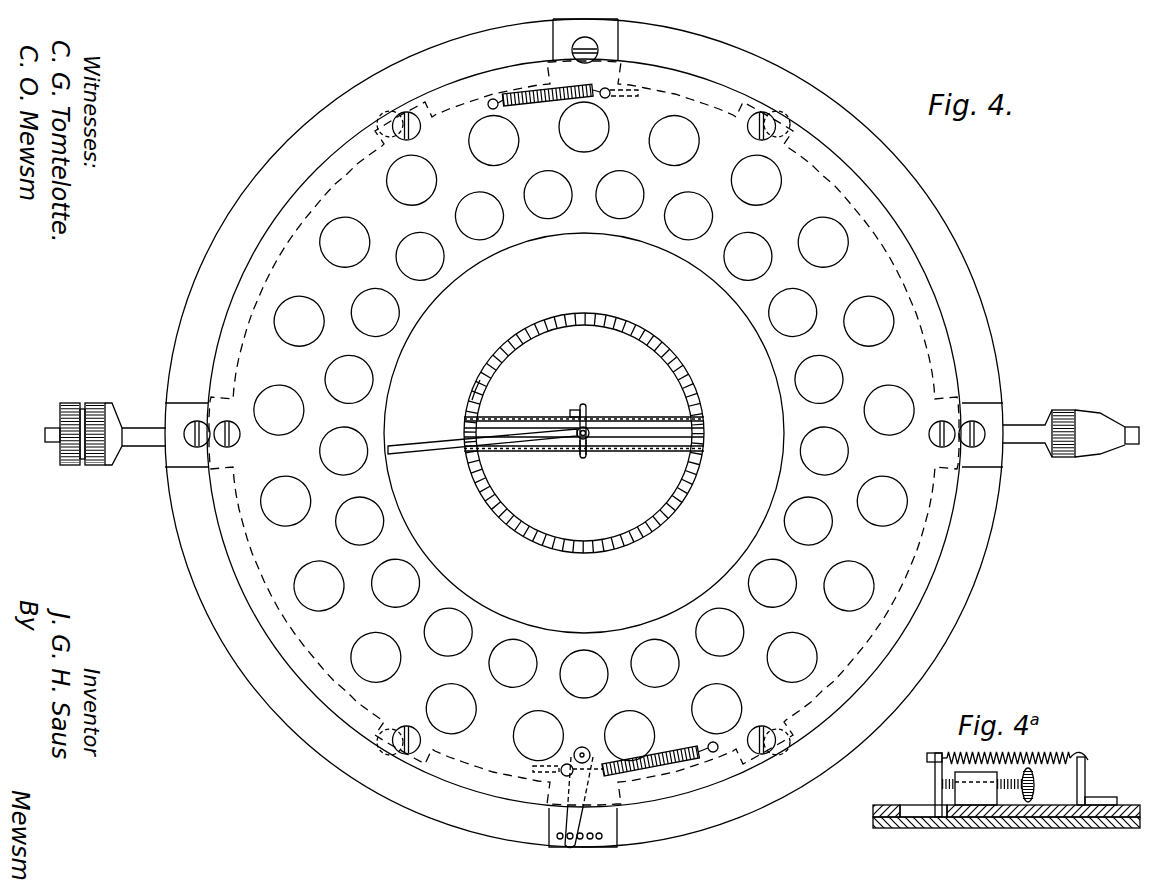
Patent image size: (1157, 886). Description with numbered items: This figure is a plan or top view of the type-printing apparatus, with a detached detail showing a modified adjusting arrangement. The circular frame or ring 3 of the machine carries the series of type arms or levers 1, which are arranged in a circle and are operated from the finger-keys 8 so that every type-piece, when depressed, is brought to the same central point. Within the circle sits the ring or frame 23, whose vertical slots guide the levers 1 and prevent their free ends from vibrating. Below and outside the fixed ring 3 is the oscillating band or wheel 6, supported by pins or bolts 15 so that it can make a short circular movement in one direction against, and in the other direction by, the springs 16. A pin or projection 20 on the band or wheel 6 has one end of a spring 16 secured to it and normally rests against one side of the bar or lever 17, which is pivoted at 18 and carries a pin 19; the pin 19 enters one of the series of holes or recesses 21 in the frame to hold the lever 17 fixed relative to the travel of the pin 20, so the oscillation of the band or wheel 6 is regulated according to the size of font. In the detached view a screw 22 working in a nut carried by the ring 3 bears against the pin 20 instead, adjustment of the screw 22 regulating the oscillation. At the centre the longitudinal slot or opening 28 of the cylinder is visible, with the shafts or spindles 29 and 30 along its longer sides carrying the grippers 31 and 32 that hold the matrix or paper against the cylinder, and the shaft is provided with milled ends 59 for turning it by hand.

In FIG. 4, the type arm or lever 1 is at (455, 438).
In FIG. 4A, the circular frame or ring 3 is at (1128, 806).
In FIG. 4A, the oscillating band or wheel 6 is at (873, 824).
In FIG. 4, the finger-keys 8 is at (584, 433).
In FIG. 4, the pins or bolts 15 is at (783, 120).
In FIG. 4, the springs 16 is at (534, 100).
In FIG. 4A, the springs 16 is at (1068, 750).
In FIG. 4, the bar or lever 17 is at (577, 820).
In FIG. 4, the pivot 18 is at (588, 744).
In FIG. 4, the pin 19 is at (556, 836).
In FIG. 4, the pin or projection 20 is at (562, 774).
In FIG. 4A, the pin or projection 20 is at (933, 760).
In FIG. 4, the series of holes or recesses 21 is at (603, 836).
In FIG. 4A, the screw 22 is at (1034, 785).
In FIG. 4, the ring or frame 23 is at (680, 372).
In FIG. 4, the longitudinal slot or opening 28 is at (645, 452).
In FIG. 4, the shaft or spindle 29 is at (640, 424).
In FIG. 4, the shaft or spindle 30 is at (537, 446).
In FIG. 4, the gripper 31 is at (582, 456).
In FIG. 4, the gripper 32 is at (587, 410).
In FIG. 4, the milled ends 59 is at (592, 418).